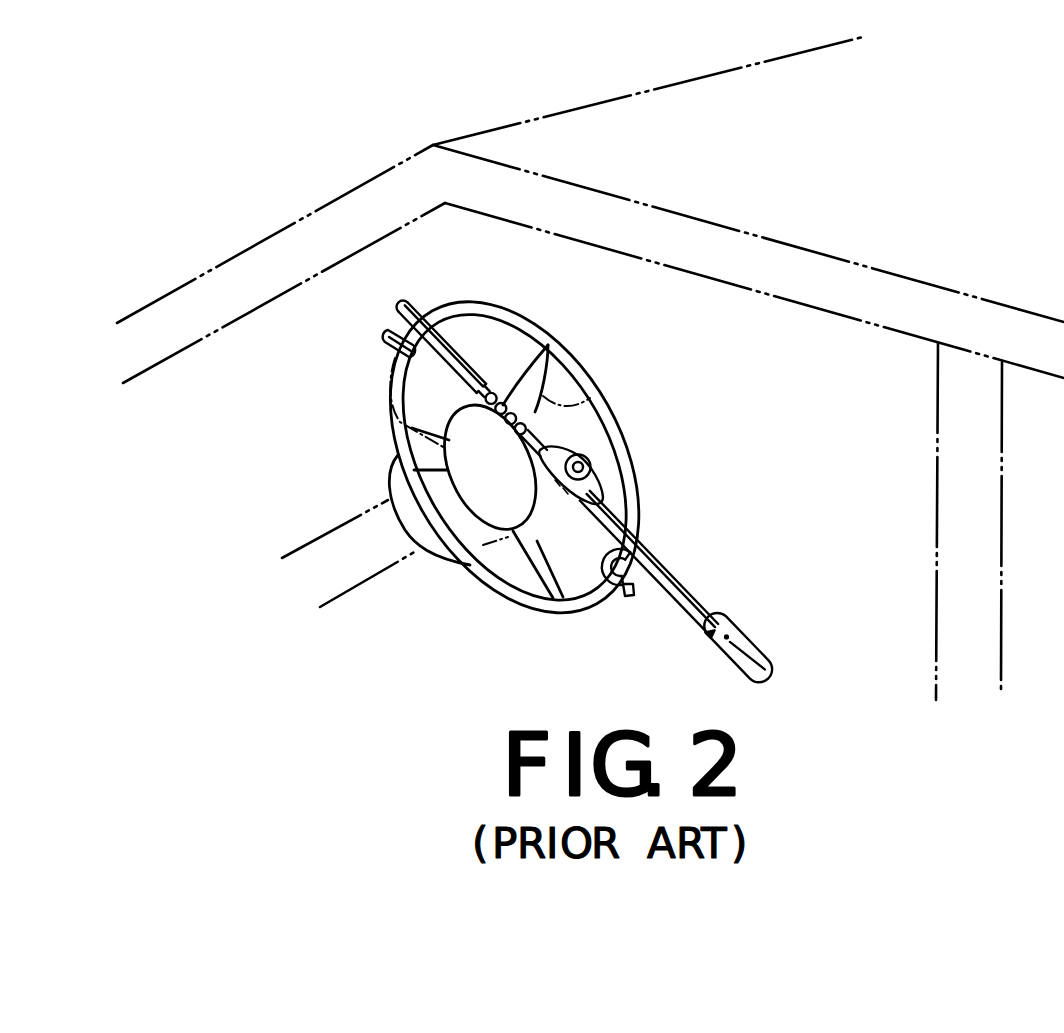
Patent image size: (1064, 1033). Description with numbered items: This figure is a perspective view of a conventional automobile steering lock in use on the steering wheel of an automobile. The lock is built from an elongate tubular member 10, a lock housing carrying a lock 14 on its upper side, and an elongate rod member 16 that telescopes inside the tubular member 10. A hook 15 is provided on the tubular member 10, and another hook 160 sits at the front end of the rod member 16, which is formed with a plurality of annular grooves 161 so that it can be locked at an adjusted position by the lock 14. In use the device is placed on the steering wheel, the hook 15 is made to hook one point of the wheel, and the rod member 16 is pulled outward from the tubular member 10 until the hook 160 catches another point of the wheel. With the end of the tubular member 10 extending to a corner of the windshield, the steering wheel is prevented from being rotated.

The elongate tubular member 10 is at (710, 597).
The lock 14 is at (600, 470).
The hook 15 is at (631, 596).
The elongate rod member 16 is at (493, 383).
The hook 160 is at (390, 342).
The annular grooves 161 is at (540, 347).